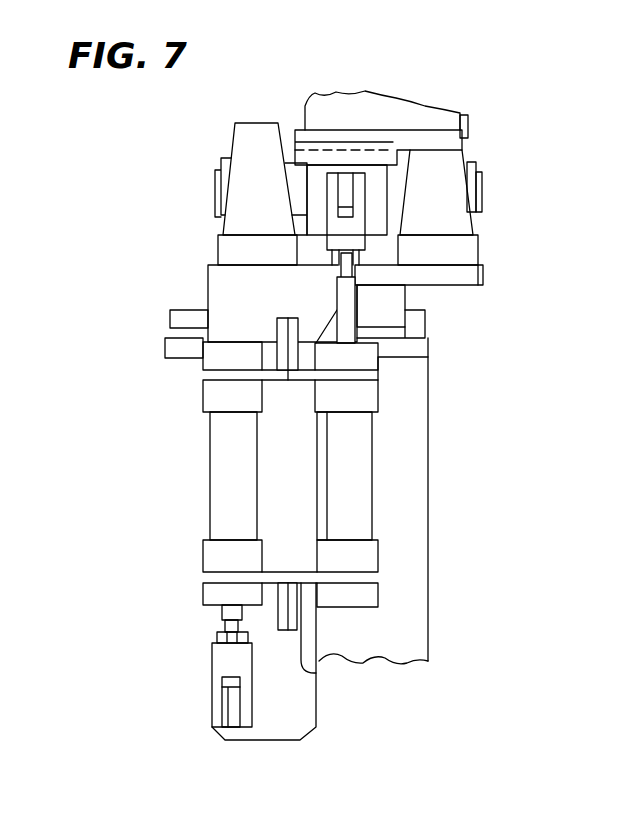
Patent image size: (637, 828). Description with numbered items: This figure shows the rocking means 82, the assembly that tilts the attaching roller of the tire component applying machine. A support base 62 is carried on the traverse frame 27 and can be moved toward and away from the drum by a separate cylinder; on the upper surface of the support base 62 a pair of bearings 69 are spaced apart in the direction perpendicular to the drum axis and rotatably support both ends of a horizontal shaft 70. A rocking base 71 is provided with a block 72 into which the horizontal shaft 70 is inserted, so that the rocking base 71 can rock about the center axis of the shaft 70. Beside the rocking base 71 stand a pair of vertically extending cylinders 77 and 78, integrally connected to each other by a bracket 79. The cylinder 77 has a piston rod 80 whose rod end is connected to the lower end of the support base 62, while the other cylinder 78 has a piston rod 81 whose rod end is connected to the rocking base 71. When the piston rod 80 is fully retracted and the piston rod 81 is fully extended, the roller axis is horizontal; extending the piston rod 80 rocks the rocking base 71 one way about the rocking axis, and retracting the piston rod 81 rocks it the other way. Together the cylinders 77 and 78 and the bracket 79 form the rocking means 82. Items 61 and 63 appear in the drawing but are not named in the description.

The traverse frame 27 is at (412, 505).
The support block 61 is at (415, 327).
The support base 62 is at (220, 287).
The bracket 63 is at (390, 300).
The bearings 69 is at (257, 135).
The horizontal shaft 70 is at (393, 198).
The rocking base 71 is at (415, 137).
The block 72 is at (377, 230).
The cylinder 77 is at (222, 475).
The cylinder 78 is at (353, 477).
The bracket 79 is at (285, 323).
The piston rod 80 is at (227, 613).
The piston rod 81 is at (345, 298).
The rocking means 82 is at (445, 403).